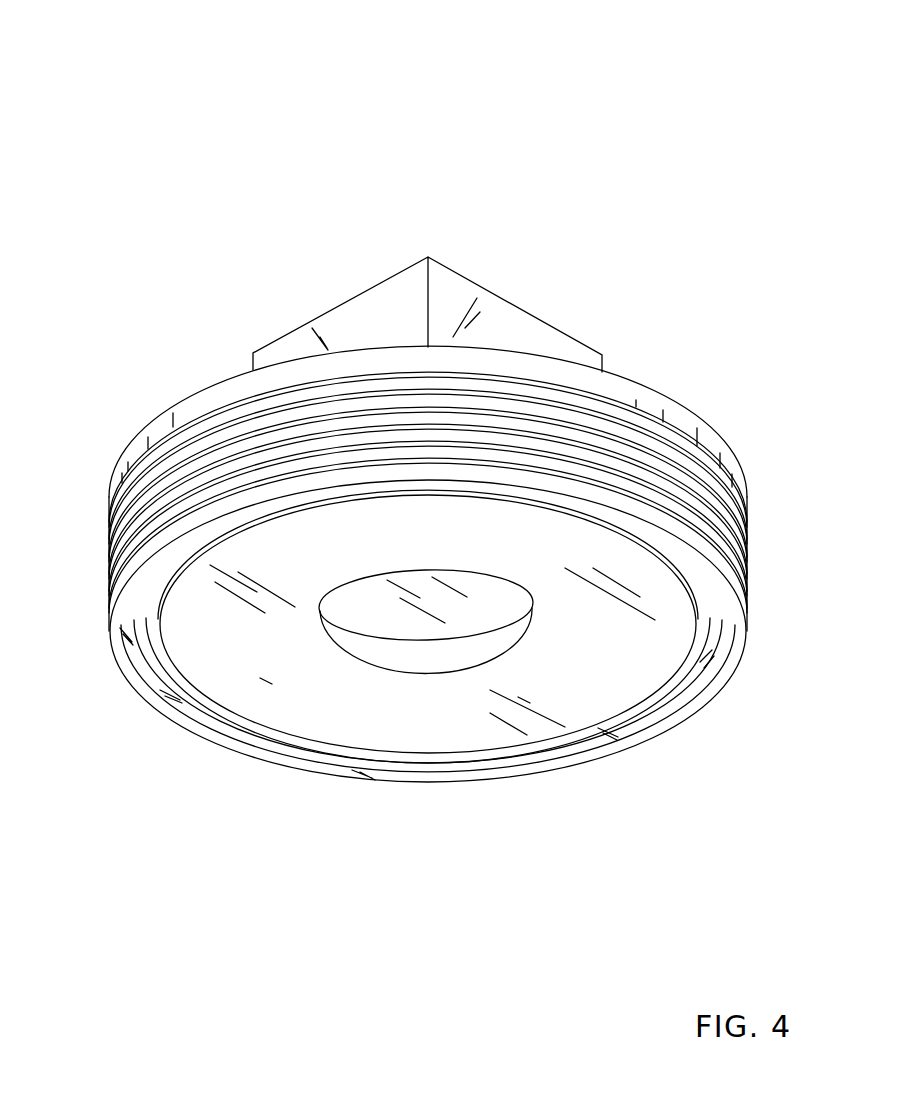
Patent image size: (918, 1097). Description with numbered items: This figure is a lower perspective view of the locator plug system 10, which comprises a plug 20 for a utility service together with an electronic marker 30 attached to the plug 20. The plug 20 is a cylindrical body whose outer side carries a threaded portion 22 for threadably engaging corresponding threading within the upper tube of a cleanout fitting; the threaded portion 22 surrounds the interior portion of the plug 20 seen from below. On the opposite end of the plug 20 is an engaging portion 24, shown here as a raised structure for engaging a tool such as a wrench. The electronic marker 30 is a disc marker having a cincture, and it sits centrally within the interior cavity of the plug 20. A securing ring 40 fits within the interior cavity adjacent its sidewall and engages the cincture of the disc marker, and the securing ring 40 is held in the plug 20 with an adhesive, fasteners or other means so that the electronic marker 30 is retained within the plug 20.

The locator plug system 10 is at (578, 100).
The plug 20 is at (673, 408).
The threaded portion 22 is at (130, 535).
The engaging portion 24 is at (377, 328).
The electronic marker 30 is at (585, 690).
The securing ring 40 is at (258, 732).